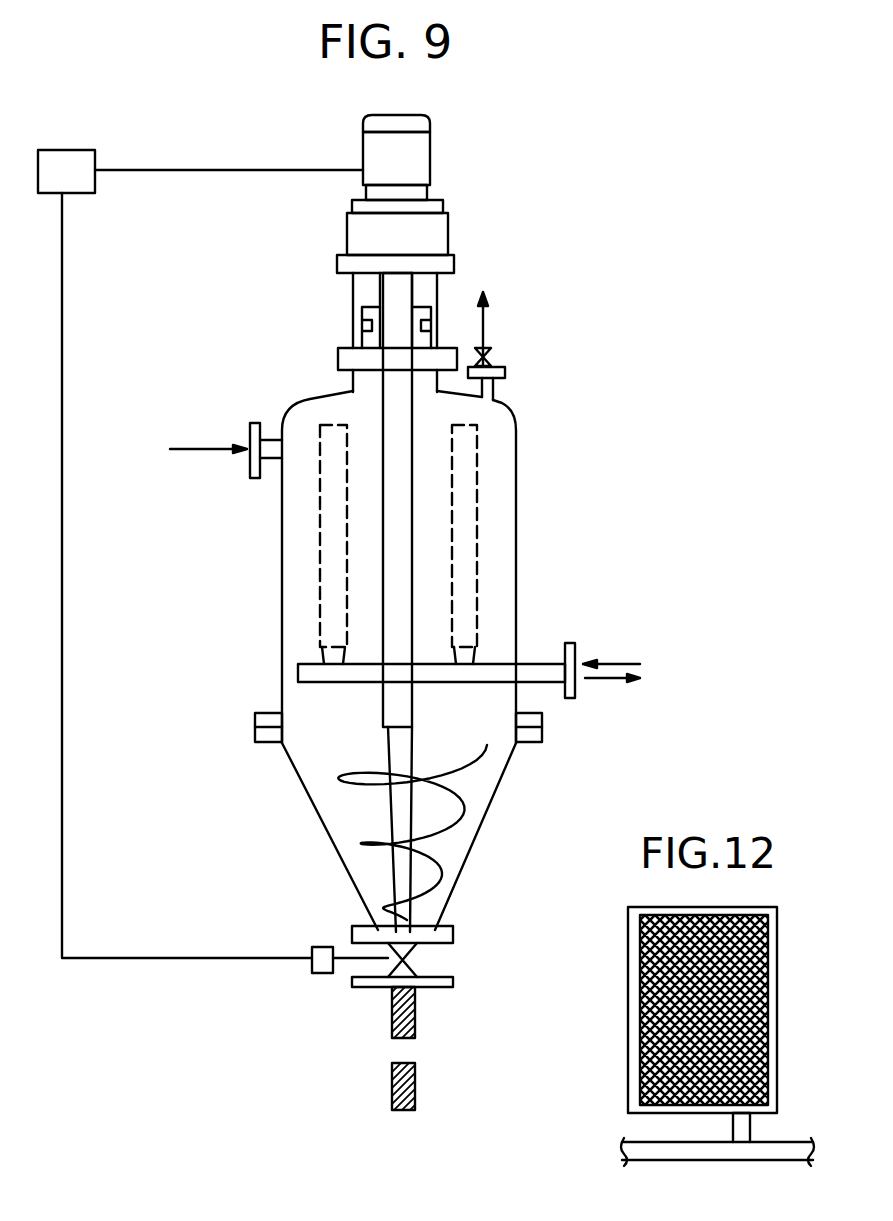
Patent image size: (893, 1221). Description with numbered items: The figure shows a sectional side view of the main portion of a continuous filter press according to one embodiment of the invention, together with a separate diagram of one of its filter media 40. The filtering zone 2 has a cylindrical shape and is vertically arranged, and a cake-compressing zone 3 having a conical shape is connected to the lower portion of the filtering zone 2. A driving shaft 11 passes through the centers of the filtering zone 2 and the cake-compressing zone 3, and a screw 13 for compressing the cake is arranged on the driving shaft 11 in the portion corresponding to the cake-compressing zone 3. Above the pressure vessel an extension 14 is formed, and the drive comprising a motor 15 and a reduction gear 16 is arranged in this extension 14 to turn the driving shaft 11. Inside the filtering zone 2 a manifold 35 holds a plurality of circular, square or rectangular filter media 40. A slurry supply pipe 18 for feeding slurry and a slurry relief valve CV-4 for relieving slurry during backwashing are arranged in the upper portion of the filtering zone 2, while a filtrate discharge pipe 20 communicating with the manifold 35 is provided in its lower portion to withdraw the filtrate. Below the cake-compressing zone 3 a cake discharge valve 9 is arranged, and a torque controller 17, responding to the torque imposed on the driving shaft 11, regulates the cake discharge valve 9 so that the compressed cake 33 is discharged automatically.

In FIG. 9, the torque controller 17 is at (92, 150).
In FIG. 9, the motor 15 is at (430, 150).
In FIG. 9, the reduction gear 16 is at (448, 225).
In FIG. 9, the driving shaft 11 is at (352, 291).
In FIG. 9, the extension 14 is at (352, 333).
In FIG. 9, the slurry relief valve CV-4 is at (500, 357).
In FIG. 9, the filtering zone 2 is at (516, 458).
In FIG. 9, the slurry supply pipe 18 is at (250, 440).
In FIG. 9, the filter media 40 is at (320, 558).
In FIG. 12, the filter media 40 is at (640, 982).
In FIG. 9, the manifold 35 is at (340, 686).
In FIG. 12, the manifold 35 is at (660, 1152).
In FIG. 9, the filtrate discharge pipe 20 is at (578, 672).
In FIG. 9, the cake-compressing zone 3 is at (484, 820).
In FIG. 9, the screw 13 is at (360, 835).
In FIG. 9, the cake discharge valve 9 is at (410, 962).
In FIG. 9, the cake 33 is at (415, 1072).